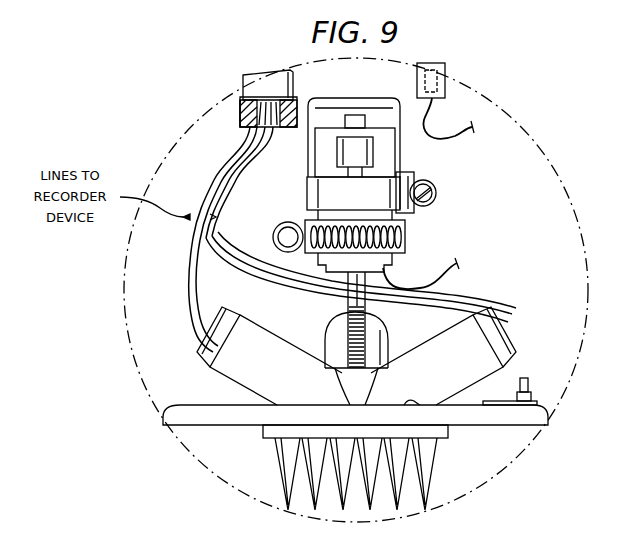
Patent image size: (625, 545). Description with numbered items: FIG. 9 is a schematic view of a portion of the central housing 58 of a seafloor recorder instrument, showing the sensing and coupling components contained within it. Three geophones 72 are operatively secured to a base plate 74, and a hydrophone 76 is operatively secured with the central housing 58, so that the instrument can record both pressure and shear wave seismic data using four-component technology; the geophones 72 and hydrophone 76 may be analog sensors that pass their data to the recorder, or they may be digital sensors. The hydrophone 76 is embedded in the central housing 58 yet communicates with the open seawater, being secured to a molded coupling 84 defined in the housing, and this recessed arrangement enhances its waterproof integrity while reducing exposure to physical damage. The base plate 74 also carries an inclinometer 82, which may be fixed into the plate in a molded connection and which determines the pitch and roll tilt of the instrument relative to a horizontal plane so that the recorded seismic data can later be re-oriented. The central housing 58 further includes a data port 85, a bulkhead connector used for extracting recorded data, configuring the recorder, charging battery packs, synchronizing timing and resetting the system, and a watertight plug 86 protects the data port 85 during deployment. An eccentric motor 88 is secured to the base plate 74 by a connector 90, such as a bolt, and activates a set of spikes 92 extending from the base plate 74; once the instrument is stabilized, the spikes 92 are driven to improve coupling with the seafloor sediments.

The central housing 58 is at (510, 124).
The geophones 72 is at (204, 348).
The base plate 74 is at (175, 405).
The hydrophone 76 is at (268, 92).
The inclinometer 82 is at (530, 390).
The molded coupling 84 is at (239, 117).
The data port 85 is at (416, 88).
The watertight plug 86 is at (445, 70).
The eccentric motor 88 is at (308, 166).
The connector 90 is at (338, 340).
The spikes 92 is at (430, 470).